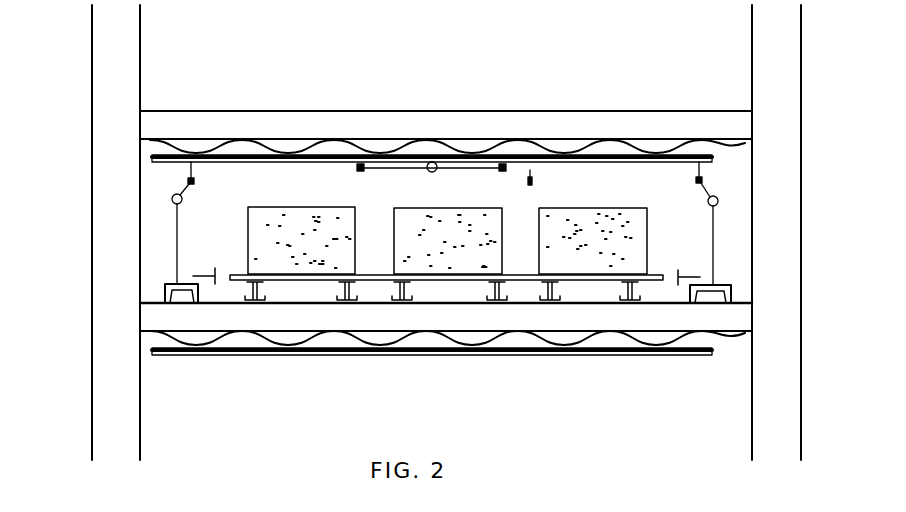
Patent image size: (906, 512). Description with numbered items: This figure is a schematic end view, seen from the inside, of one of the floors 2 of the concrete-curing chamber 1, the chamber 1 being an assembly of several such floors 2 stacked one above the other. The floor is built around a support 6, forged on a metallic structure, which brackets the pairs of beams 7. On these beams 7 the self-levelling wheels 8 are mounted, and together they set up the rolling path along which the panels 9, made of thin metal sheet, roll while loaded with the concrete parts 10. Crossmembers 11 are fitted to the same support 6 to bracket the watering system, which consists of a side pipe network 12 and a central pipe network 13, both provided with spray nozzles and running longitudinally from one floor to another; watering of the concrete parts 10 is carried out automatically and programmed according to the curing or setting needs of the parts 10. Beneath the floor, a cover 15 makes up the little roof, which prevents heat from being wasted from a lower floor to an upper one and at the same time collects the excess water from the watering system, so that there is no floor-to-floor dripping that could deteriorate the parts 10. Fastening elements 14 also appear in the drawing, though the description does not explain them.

The chamber 1 is at (76, 140).
The floor 2 is at (530, 177).
The support 6 is at (253, 124).
The beam 7 is at (284, 283).
The self-levelling wheel 8 is at (350, 296).
The panel 9 is at (300, 281).
The concrete part 10 is at (313, 218).
The crossmember 11 is at (160, 286).
The side pipe network 12 is at (172, 202).
The central pipe network 13 is at (432, 162).
The fastening bolt 14 is at (193, 177).
The cover 15 is at (363, 150).